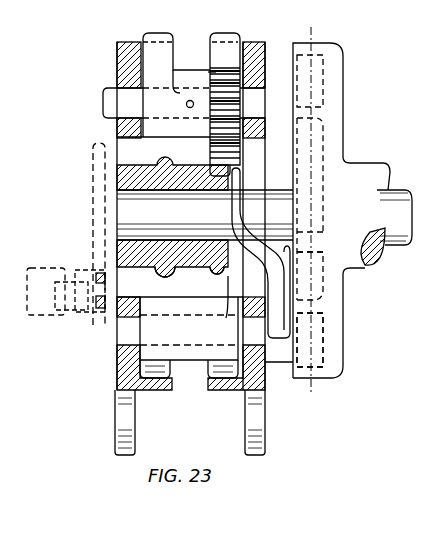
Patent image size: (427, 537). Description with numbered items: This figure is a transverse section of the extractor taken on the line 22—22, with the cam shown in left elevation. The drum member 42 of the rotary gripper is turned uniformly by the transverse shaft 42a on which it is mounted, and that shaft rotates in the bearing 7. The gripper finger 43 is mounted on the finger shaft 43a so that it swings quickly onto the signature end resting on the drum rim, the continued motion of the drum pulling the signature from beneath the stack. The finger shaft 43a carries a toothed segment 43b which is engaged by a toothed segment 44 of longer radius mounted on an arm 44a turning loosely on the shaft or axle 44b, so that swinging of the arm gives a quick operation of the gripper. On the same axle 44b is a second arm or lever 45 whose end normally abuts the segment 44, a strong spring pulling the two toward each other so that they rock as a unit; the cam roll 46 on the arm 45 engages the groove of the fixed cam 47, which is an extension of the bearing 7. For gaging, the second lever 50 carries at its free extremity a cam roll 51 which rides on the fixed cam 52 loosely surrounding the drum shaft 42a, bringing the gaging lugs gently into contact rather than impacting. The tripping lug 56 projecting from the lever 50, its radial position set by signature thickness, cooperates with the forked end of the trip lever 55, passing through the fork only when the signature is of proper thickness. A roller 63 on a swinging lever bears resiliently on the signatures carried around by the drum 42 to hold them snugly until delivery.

The bearing 7 is at (377, 215).
The line 22— 22 is at (333, 33).
The drum member 42 is at (128, 43).
The transverse shaft 42a is at (122, 204).
The gripper finger 43 is at (191, 104).
The finger shaft 43a is at (112, 100).
The toothed segment 43b is at (211, 72).
The toothed segment 44 is at (213, 152).
The arm 44a is at (230, 300).
The shaft or axle 44b is at (189, 337).
The second arm or lever 45 is at (279, 293).
The cam roll 46 is at (310, 242).
The cam 47 is at (310, 340).
The second lever 50 is at (117, 268).
The cam roll 51 is at (103, 310).
The fixed cam 52 is at (92, 156).
The trip lever 55 is at (46, 291).
The tripping lug 56 is at (71, 296).
The roller 63 is at (199, 422).